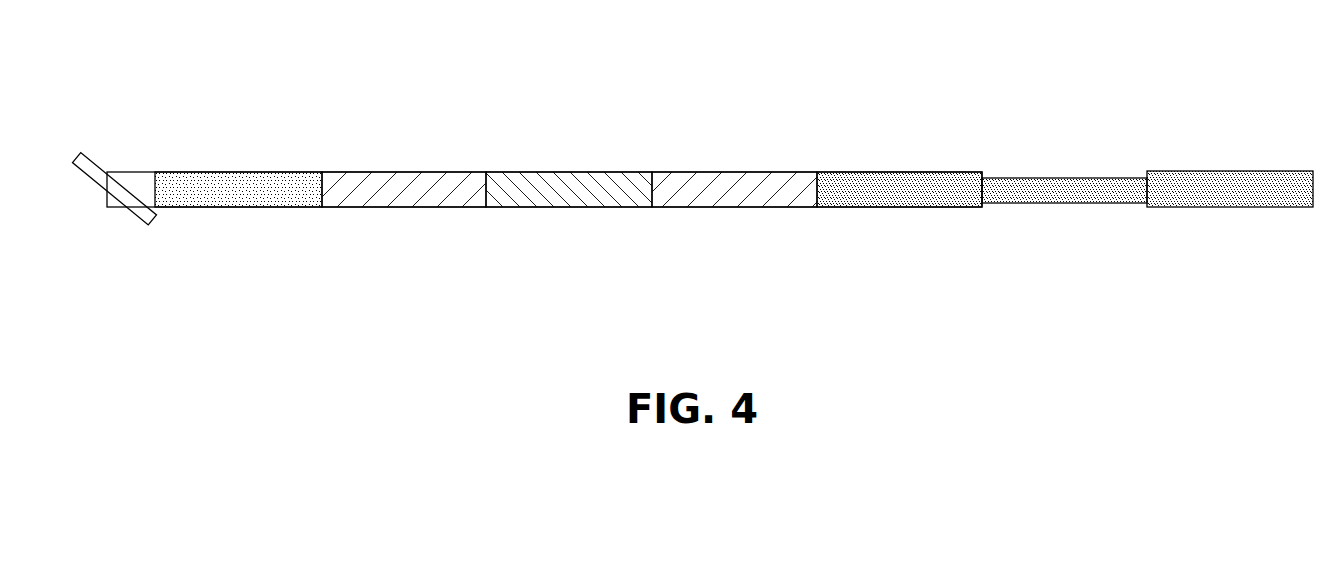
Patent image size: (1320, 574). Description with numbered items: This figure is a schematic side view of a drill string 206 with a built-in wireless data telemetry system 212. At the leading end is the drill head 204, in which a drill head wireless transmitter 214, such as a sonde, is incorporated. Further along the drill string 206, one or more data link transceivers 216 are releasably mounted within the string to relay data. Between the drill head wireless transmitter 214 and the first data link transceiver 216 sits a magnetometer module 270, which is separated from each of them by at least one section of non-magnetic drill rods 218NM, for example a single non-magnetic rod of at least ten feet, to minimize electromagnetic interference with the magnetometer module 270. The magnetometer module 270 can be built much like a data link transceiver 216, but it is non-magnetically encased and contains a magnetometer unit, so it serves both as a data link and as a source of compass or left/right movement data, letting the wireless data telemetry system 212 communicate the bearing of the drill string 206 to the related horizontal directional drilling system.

The drill head 204 is at (100, 232).
The drill string 206 is at (678, 272).
The wireless data telemetry system 212 is at (155, 118).
The drill head wireless transmitter 214 is at (237, 208).
The data link transceiver 216 is at (1063, 204).
The non-magnetic drill rods 218NM is at (402, 208).
The magnetometer module 270 is at (568, 208).